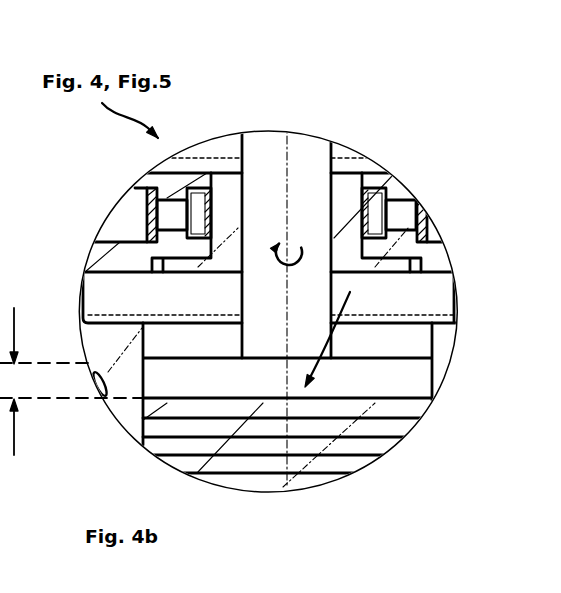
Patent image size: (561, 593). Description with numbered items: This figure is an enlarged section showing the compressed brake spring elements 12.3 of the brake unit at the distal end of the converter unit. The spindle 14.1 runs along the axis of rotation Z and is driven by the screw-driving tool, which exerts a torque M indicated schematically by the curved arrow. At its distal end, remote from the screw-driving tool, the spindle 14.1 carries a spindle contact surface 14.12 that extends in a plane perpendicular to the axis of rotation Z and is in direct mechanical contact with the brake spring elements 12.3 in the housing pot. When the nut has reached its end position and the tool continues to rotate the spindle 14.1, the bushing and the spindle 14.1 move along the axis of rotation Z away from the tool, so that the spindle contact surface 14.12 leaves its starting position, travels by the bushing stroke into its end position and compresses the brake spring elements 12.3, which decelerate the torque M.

The spindle 14.1 is at (298, 198).
The spindle contact surface 14.12 is at (387, 402).
The brake spring elements 12.3 is at (337, 437).
The axis of rotation Z is at (287, 175).
The torque M is at (294, 244).